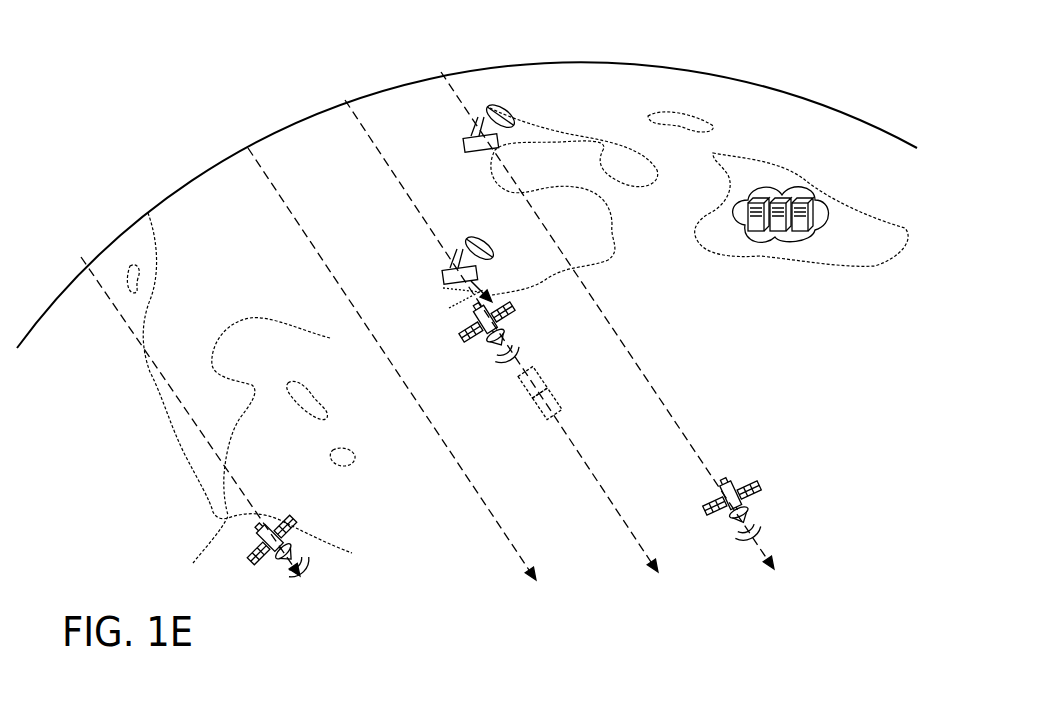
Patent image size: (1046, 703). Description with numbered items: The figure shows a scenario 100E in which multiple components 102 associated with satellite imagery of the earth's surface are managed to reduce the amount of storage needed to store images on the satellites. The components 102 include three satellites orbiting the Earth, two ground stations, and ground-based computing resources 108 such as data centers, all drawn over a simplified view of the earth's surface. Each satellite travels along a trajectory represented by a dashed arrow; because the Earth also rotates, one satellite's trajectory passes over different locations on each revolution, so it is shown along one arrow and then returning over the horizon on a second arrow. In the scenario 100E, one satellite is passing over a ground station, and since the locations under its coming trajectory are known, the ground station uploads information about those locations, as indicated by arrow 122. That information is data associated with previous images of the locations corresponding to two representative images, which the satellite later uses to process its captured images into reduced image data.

The scenario 100E is at (896, 80).
The components 102 is at (384, 62).
The ground-based computing resources 108 is at (781, 240).
The arrow 122 is at (522, 284).